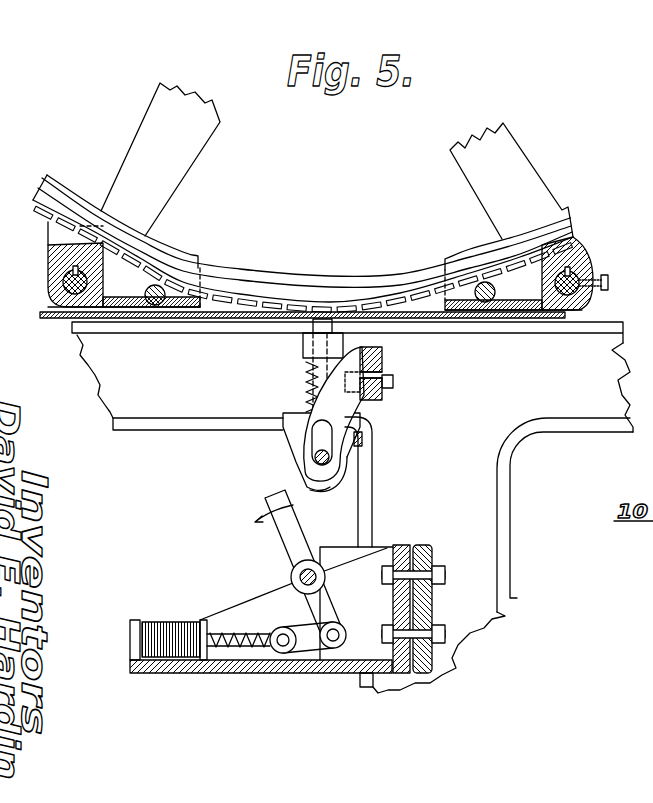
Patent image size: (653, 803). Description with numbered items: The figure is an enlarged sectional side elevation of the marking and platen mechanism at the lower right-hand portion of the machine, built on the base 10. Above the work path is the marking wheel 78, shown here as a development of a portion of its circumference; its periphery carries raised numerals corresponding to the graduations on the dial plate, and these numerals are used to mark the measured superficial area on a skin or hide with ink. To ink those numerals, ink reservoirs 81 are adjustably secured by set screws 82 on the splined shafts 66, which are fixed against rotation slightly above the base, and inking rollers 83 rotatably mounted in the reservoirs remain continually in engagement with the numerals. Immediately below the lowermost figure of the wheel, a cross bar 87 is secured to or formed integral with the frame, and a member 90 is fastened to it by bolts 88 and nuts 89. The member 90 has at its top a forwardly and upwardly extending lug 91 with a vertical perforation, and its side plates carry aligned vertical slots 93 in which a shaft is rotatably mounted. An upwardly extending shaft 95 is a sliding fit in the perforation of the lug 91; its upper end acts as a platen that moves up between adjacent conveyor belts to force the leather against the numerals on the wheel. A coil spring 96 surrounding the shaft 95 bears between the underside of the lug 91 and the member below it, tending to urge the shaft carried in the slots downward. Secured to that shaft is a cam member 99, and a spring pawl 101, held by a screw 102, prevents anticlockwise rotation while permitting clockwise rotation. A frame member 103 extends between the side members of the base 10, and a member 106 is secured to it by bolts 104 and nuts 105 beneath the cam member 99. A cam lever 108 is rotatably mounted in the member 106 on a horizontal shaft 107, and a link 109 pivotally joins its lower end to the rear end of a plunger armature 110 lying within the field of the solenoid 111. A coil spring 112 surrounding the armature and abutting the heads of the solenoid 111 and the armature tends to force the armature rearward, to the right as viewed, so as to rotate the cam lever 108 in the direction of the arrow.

The base 10 is at (500, 503).
The splined shafts 66 is at (48, 294).
The marking wheel 78 is at (507, 182).
The ink reservoirs 81 is at (72, 337).
The set screws 82 is at (610, 283).
The inking rollers 83 is at (160, 300).
The cross bar 87 is at (383, 353).
The bolts 88 is at (382, 363).
The nuts 89 is at (393, 388).
The member 90 is at (362, 340).
The lug 91 is at (303, 353).
The slots 93 is at (310, 428).
The shaft 95 is at (303, 338).
The coil spring 96 is at (306, 388).
The cam member 99 is at (300, 478).
The spring pawl 101 is at (372, 453).
The screw 102 is at (358, 438).
The frame member 103 is at (433, 557).
The bolts 104 is at (415, 632).
The nuts 105 is at (445, 628).
The member 106 is at (292, 674).
The horizontal shaft 107 is at (315, 562).
The cam lever 108 is at (292, 528).
The link 109 is at (310, 645).
The plunger armature 110 is at (267, 637).
The solenoid 111 is at (170, 625).
The coil spring 112 is at (237, 665).